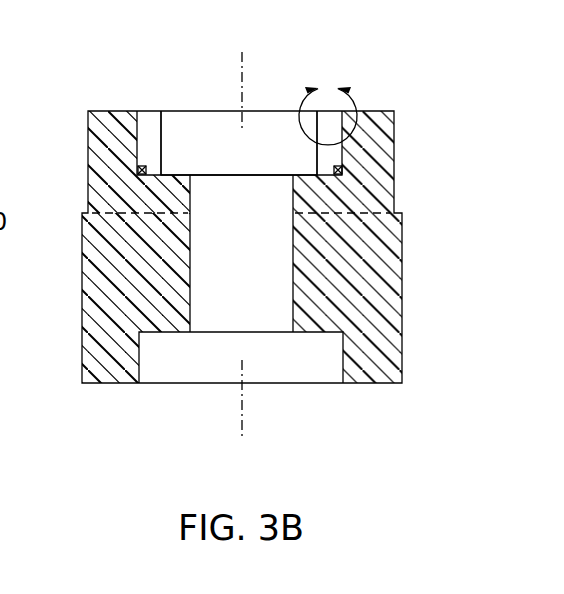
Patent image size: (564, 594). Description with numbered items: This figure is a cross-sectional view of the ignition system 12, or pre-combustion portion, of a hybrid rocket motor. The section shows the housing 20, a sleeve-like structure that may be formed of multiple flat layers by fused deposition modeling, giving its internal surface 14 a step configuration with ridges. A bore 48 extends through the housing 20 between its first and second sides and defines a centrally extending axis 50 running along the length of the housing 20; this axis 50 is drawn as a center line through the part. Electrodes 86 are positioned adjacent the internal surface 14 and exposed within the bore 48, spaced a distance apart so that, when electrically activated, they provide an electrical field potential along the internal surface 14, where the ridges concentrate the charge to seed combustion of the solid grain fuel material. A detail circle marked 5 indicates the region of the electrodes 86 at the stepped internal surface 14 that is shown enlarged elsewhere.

The ignition system 12 is at (231, 224).
The internal surface 14 is at (139, 134).
The housing 20 is at (403, 150).
The bore 48 is at (266, 100).
The detail region of FIG. 5 is at (352, 100).
The centrally extending axis 50 is at (240, 65).
The first electrode 86 is at (138, 172).